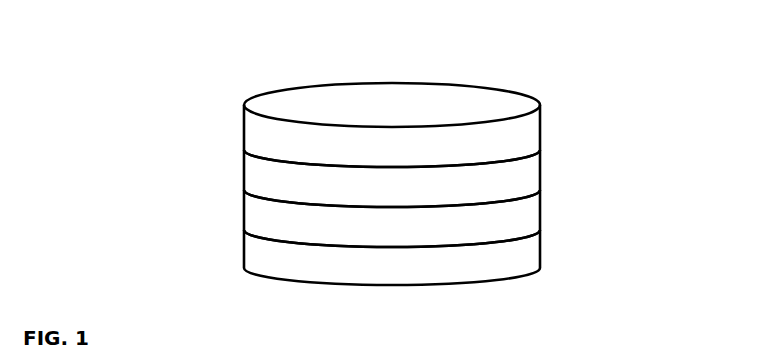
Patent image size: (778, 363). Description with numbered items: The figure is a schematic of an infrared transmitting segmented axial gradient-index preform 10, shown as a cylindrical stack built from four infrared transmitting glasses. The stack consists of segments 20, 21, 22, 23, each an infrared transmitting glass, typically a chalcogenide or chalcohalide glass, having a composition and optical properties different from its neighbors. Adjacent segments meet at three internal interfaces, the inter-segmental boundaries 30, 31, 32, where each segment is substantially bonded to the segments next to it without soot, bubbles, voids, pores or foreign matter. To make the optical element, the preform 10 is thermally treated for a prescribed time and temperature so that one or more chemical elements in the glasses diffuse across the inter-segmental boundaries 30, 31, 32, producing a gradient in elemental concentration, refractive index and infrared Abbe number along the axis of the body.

The preform 10 is at (550, 88).
The segment 20 is at (275, 132).
The segment 21 is at (258, 177).
The segment 22 is at (267, 218).
The segment 23 is at (263, 253).
The inter-segmental boundary 30 is at (535, 155).
The inter-segmental boundary 31 is at (535, 200).
The inter-segmental boundary 32 is at (535, 233).